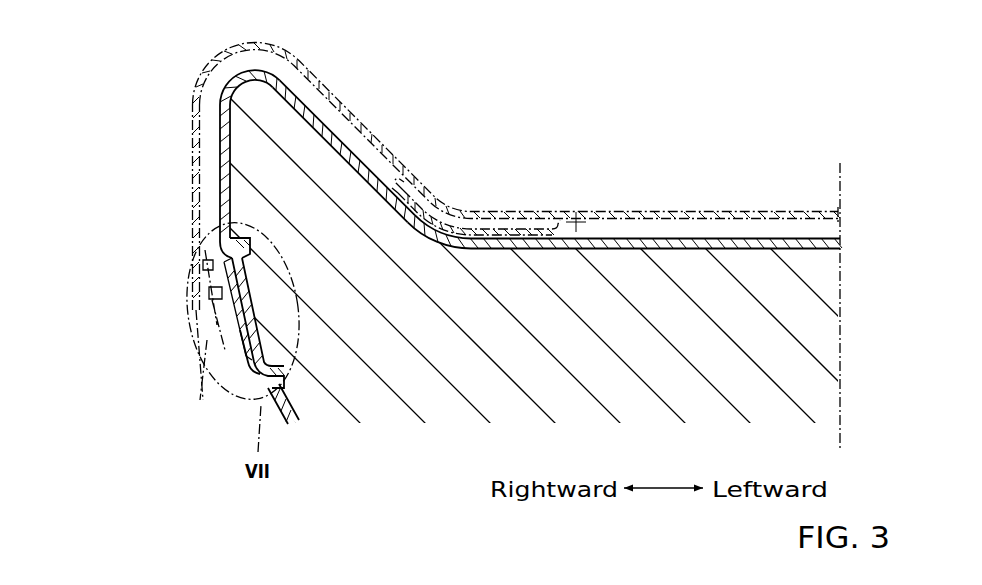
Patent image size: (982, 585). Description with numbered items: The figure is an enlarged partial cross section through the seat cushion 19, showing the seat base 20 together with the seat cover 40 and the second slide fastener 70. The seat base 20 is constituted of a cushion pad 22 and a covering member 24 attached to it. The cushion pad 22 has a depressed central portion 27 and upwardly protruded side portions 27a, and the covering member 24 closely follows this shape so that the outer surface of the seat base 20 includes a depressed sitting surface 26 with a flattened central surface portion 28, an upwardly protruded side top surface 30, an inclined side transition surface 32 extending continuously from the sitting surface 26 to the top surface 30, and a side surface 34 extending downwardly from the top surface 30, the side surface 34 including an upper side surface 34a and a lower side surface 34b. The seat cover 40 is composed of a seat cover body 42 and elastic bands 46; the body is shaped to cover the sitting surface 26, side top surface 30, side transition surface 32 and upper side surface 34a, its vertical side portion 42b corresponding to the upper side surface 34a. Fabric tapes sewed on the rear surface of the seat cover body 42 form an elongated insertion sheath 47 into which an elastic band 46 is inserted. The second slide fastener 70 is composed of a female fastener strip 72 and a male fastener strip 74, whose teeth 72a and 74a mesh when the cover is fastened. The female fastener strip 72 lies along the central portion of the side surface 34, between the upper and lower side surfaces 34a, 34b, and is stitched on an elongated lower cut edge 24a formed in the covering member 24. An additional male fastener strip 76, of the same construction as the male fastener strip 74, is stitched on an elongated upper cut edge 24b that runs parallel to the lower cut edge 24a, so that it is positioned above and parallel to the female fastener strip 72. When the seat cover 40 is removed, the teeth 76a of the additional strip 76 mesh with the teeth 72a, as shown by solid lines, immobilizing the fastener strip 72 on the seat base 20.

The seat cushion 19 is at (556, 110).
The seat base 20 is at (808, 118).
The cushion pad 22 is at (768, 265).
The covering member 24 is at (742, 245).
The lower cut edge 24a is at (262, 378).
The upper cut edge 24b is at (240, 243).
The sitting surface 26 is at (647, 236).
The central portion 27 is at (627, 262).
The side portions 27a is at (253, 130).
The central surface portion 28 is at (685, 236).
The side top surfaces 30 is at (246, 72).
The side transition surfaces 32 is at (336, 118).
The side surfaces 34 is at (217, 185).
The upper side surface 34a is at (144, 173).
The lower side surface 34b is at (272, 410).
The seat cover 40 is at (192, 116).
The seat cover body 42 is at (455, 221).
The vertical side portions 42b is at (194, 170).
The elastic bands 46 is at (455, 208).
The elongated insertion sheaths 47 is at (408, 176).
The second slide fastener 70 is at (107, 347).
The female fastener strip 72 is at (232, 358).
The teeth 72a is at (207, 395).
The male fastener strip 74 is at (213, 312).
The teeth 74a is at (172, 317).
The additional male fastener strip 76 is at (240, 302).
The teeth 76a is at (180, 309).